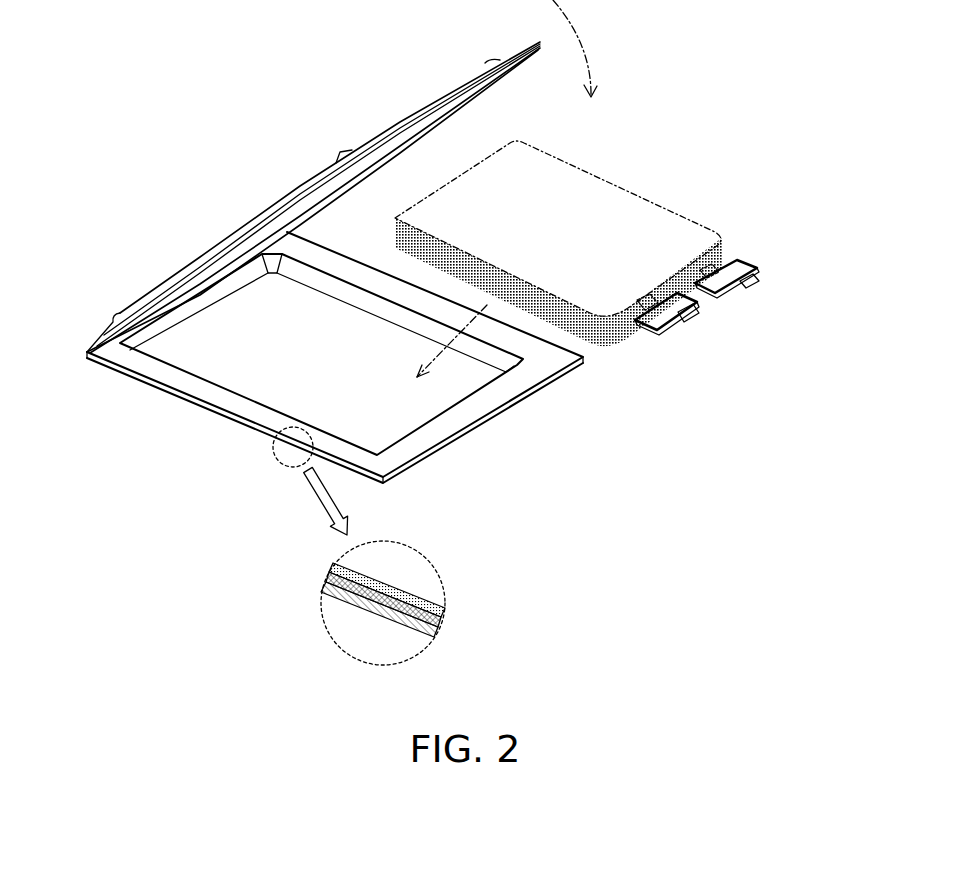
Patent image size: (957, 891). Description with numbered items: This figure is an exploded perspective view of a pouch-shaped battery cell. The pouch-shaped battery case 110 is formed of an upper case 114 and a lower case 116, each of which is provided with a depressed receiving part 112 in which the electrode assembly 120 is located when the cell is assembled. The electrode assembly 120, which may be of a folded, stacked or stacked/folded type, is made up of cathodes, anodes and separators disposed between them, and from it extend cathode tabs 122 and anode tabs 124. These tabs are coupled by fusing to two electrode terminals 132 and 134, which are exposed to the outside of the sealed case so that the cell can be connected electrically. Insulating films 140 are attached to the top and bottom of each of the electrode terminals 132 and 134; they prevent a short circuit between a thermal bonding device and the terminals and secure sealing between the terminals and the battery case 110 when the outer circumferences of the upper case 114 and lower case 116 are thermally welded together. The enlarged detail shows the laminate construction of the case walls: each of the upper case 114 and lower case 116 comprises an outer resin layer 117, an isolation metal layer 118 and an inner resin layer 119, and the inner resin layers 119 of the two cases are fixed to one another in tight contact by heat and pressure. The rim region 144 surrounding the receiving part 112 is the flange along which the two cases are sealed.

The battery case 110 is at (172, 230).
The depressed receiving part 112 is at (400, 160).
The upper case 114 is at (363, 143).
The lower case 116 is at (232, 416).
The outer resin layer 117 is at (450, 608).
The isolation metal layer 118 is at (450, 620).
The inner resin layer 119 is at (438, 633).
The electrode assembly 120 is at (625, 205).
The cathode tabs 122 is at (631, 310).
The anode tabs 124 is at (717, 241).
The electrode terminal 132 is at (675, 312).
The electrode terminal 134 is at (757, 278).
The insulating films 140 is at (697, 314).
The flange 144 is at (460, 420).